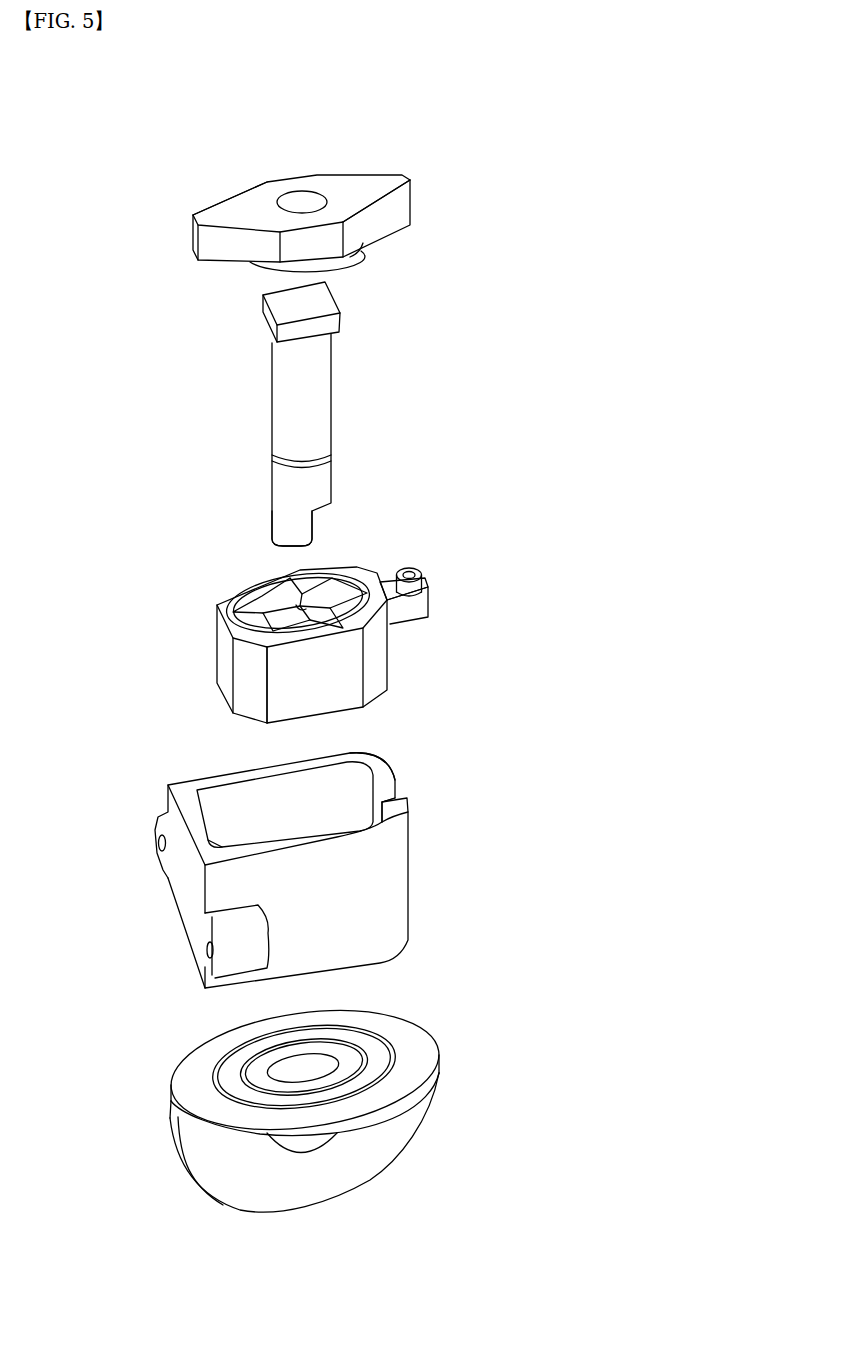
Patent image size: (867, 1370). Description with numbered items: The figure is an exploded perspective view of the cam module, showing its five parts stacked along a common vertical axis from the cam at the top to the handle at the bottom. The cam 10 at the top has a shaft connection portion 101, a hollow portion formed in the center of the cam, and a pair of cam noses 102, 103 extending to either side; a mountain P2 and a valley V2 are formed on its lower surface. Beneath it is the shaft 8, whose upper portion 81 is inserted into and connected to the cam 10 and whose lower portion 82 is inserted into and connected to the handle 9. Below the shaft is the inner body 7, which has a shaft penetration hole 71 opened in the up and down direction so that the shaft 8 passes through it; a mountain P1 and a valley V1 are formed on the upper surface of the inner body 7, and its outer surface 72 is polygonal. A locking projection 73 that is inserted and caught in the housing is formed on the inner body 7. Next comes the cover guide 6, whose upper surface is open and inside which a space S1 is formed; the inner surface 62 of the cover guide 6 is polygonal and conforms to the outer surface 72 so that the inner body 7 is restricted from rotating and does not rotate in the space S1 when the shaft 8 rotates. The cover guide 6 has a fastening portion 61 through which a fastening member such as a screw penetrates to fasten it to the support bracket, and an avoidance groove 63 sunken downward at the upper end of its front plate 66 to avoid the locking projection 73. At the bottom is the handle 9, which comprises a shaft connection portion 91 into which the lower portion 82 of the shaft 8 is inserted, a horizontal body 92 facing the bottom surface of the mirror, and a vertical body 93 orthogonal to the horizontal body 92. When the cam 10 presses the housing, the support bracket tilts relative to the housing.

The cam 10 is at (333, 114).
The shaft connection portion 101 is at (317, 192).
The cam nose 102 is at (223, 212).
The cam nose 103 is at (375, 185).
The mountain P2 is at (270, 275).
The valley V2 is at (313, 260).
The shaft 8 is at (322, 397).
The upper portion of the shaft 81 is at (333, 327).
The lower portion of the shaft 82 is at (288, 520).
The inner body 7 is at (380, 658).
The shaft penetration hole 71 is at (237, 590).
The outer surface of the inner body 72 is at (280, 680).
The locking projection 73 is at (428, 582).
The mountain P1 is at (287, 595).
The valley V1 is at (328, 598).
The cover guide 6 is at (400, 887).
The fastening portion 61 is at (262, 947).
The inner surface of the cover guide 62 is at (230, 802).
The avoidance groove 63 is at (392, 792).
The front plate 66 is at (400, 770).
The space S1 is at (291, 808).
The handle 9 is at (326, 1103).
The shaft connection portion 91 is at (270, 1065).
The horizontal body 92 is at (410, 1107).
The vertical body 93 is at (383, 1163).